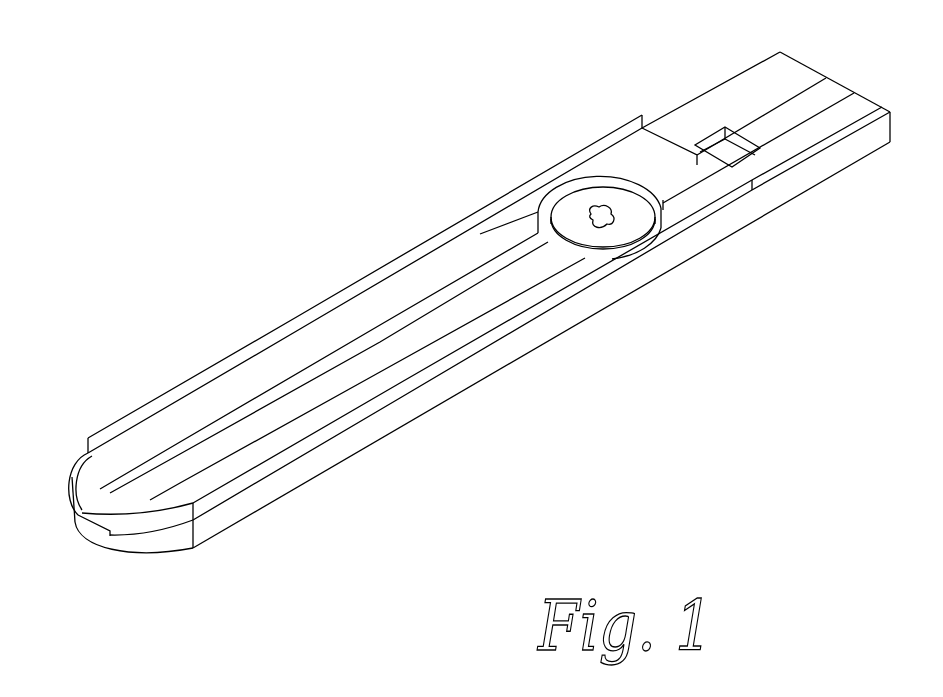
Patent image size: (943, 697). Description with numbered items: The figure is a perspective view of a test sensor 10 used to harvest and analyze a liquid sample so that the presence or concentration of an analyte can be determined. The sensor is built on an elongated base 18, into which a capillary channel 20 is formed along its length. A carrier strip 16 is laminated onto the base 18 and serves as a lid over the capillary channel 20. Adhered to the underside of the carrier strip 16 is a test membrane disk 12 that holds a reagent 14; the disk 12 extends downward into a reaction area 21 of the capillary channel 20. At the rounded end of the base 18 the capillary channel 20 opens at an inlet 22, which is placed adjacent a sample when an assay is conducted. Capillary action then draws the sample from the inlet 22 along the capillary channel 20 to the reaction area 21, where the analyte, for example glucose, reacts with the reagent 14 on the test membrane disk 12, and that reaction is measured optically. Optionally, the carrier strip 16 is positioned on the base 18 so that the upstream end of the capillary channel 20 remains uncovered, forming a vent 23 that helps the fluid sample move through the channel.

The test sensor 10 is at (333, 130).
The test membrane disk 12 is at (572, 207).
The reagent 14 is at (598, 208).
The carrier strip 16 is at (222, 497).
The base 18 is at (552, 327).
The capillary channel 20 is at (259, 425).
The reaction area 21 is at (655, 200).
The inlet 22 is at (88, 533).
The vent 23 is at (733, 149).